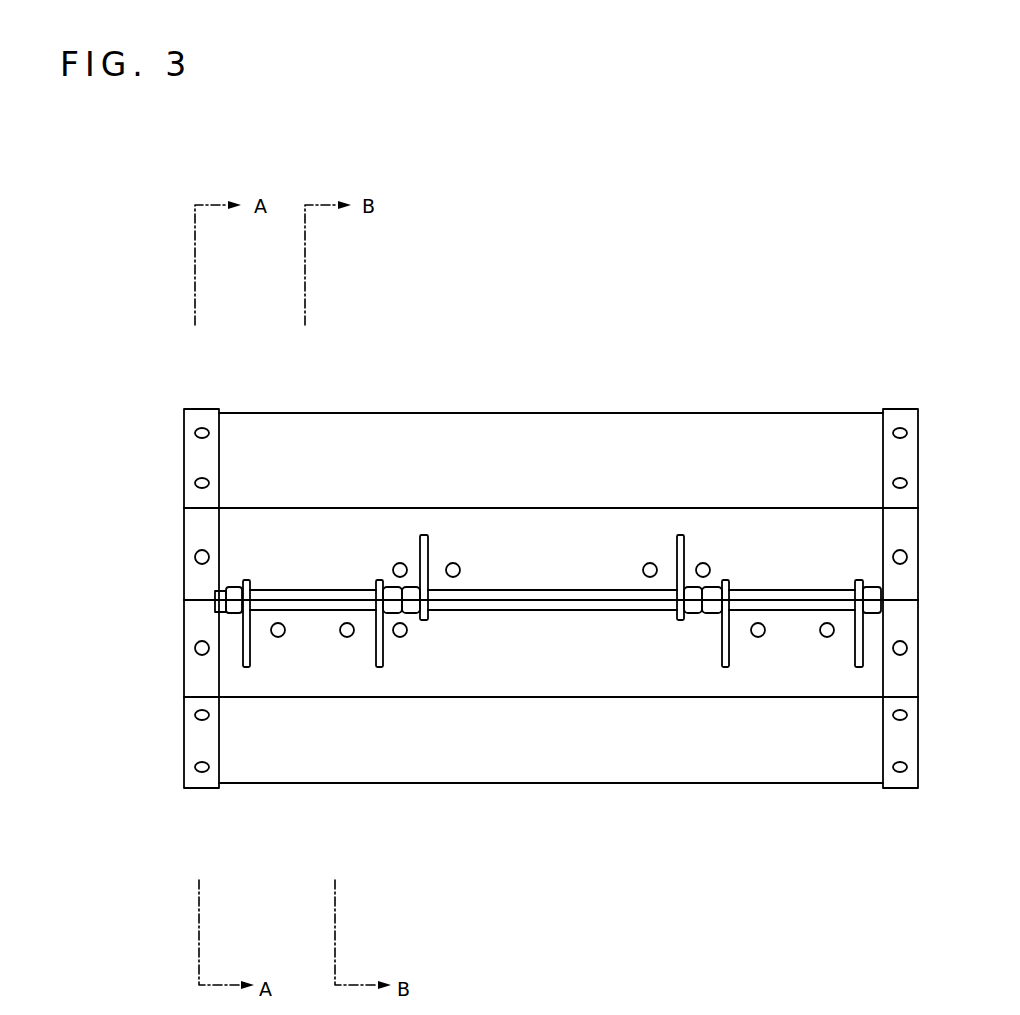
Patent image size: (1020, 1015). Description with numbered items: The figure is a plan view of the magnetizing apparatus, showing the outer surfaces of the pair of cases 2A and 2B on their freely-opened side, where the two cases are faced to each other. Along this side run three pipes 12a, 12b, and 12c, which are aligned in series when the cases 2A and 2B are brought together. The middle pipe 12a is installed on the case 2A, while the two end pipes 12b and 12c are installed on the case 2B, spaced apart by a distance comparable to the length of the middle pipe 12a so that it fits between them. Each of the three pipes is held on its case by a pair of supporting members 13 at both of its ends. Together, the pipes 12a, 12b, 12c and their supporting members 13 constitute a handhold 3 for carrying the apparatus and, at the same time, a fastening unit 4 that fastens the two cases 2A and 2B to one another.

The case 2A is at (183, 502).
The case 2B is at (183, 675).
The handhold 3 is at (548, 544).
The fastening unit 4 is at (548, 574).
The pipe 12a is at (545, 590).
The pipe 12b is at (305, 590).
The pipe 12c is at (797, 590).
The supporting member 13 is at (554, 604).